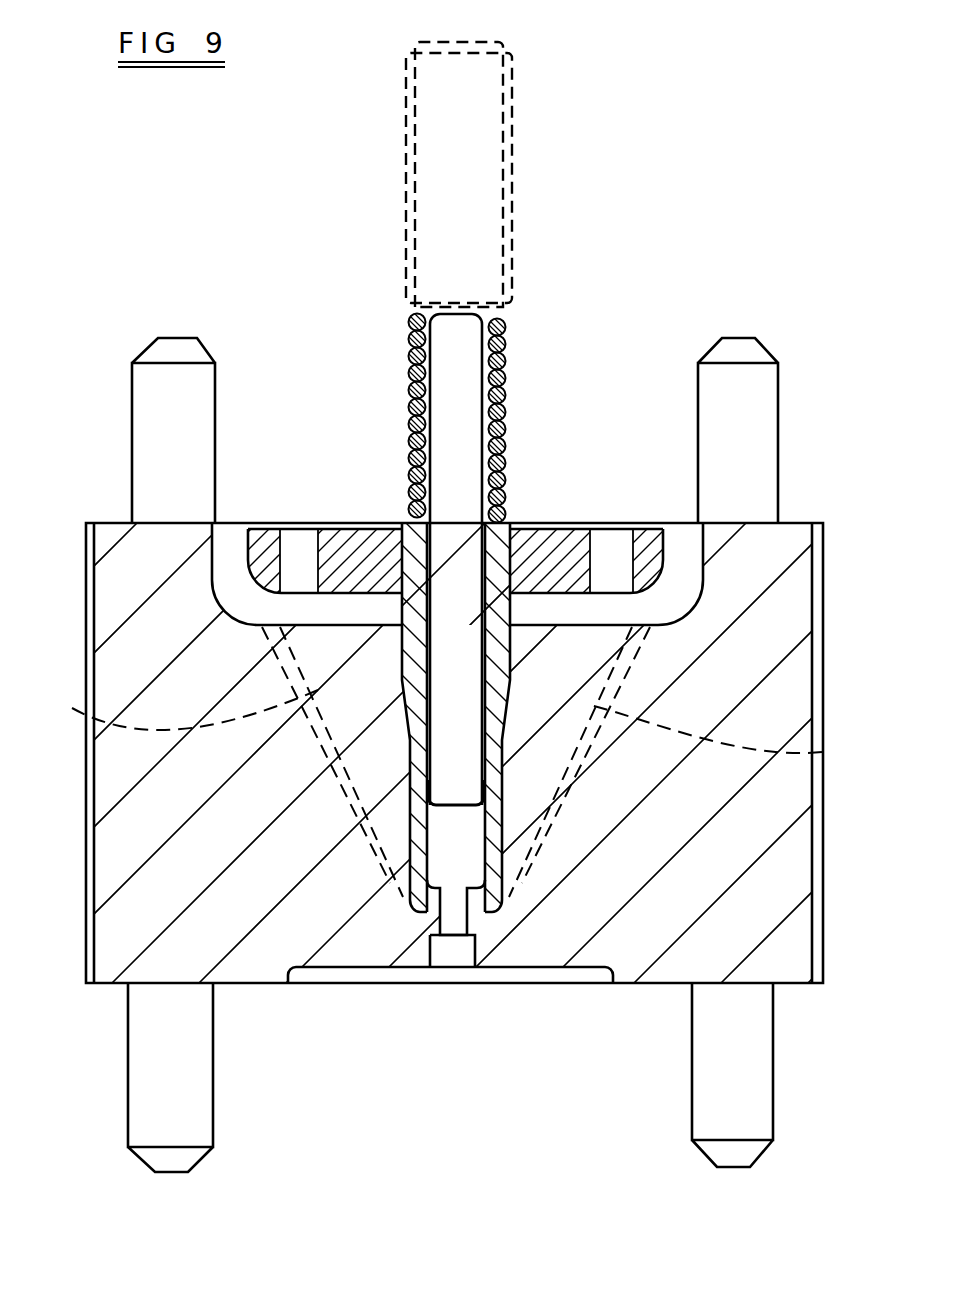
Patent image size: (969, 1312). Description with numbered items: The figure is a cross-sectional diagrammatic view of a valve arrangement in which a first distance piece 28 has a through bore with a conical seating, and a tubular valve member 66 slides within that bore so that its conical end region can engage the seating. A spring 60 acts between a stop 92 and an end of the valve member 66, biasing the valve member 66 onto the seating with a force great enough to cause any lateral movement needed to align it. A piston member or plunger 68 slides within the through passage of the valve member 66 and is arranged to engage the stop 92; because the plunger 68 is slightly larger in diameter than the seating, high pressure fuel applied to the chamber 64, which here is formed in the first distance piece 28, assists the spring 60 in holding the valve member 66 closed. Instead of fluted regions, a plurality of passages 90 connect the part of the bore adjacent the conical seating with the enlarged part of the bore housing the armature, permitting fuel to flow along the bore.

The first distance piece 28 is at (773, 618).
The spring 60 is at (503, 363).
The chamber 64 is at (588, 983).
The valve member 66 is at (403, 905).
The plunger 68 is at (452, 430).
The passages 90 is at (449, 762).
The stop 92 is at (502, 160).